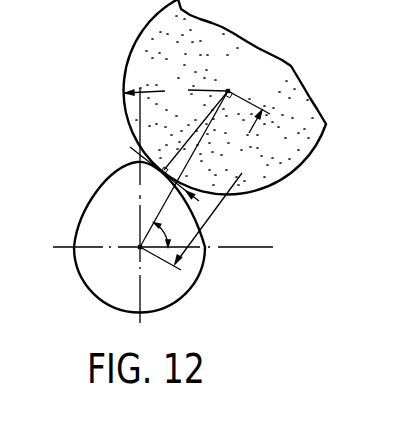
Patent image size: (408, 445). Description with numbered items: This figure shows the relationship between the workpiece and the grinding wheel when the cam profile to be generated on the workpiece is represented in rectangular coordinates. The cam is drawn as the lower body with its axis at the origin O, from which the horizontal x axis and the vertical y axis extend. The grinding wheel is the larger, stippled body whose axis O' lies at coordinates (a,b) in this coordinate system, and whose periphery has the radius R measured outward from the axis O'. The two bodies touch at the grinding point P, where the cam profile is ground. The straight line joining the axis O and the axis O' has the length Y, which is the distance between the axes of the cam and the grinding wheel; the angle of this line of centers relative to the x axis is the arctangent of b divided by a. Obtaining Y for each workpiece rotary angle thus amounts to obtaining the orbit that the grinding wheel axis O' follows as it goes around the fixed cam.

The grinding wheel axis O' is at (225, 97).
The cam axis O is at (139, 237).
The x axis x is at (172, 247).
The y axis y is at (137, 189).
The grinding point P is at (171, 169).
The grinding wheel radius R is at (176, 94).
The distance between axes of cam and grinding wheel Y is at (205, 180).